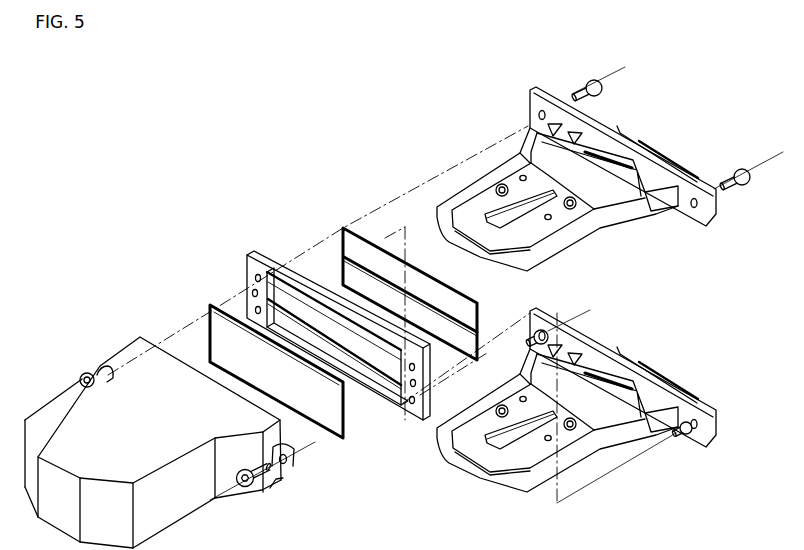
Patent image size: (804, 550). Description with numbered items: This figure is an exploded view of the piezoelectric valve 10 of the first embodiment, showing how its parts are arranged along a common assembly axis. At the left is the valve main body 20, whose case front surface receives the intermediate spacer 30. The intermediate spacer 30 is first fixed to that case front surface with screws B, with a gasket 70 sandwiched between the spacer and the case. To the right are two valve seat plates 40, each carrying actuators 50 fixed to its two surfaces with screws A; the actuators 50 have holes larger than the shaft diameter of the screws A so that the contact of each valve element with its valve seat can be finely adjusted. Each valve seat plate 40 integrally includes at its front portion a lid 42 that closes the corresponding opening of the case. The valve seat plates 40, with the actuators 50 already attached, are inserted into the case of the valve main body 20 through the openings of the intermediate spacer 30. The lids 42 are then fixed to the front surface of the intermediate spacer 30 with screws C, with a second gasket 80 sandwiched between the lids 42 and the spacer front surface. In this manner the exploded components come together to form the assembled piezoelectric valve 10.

The piezoelectric valve 10 is at (288, 127).
The valve main body 20 is at (72, 412).
The intermediate spacer 30 is at (262, 250).
The valve seat plate 40 is at (511, 117).
The lid 42 is at (713, 215).
The actuator 50 is at (480, 198).
The gasket 70 is at (212, 303).
The gasket 80 is at (343, 226).
The screw A is at (575, 208).
The screw B is at (87, 366).
The screw C is at (588, 76).